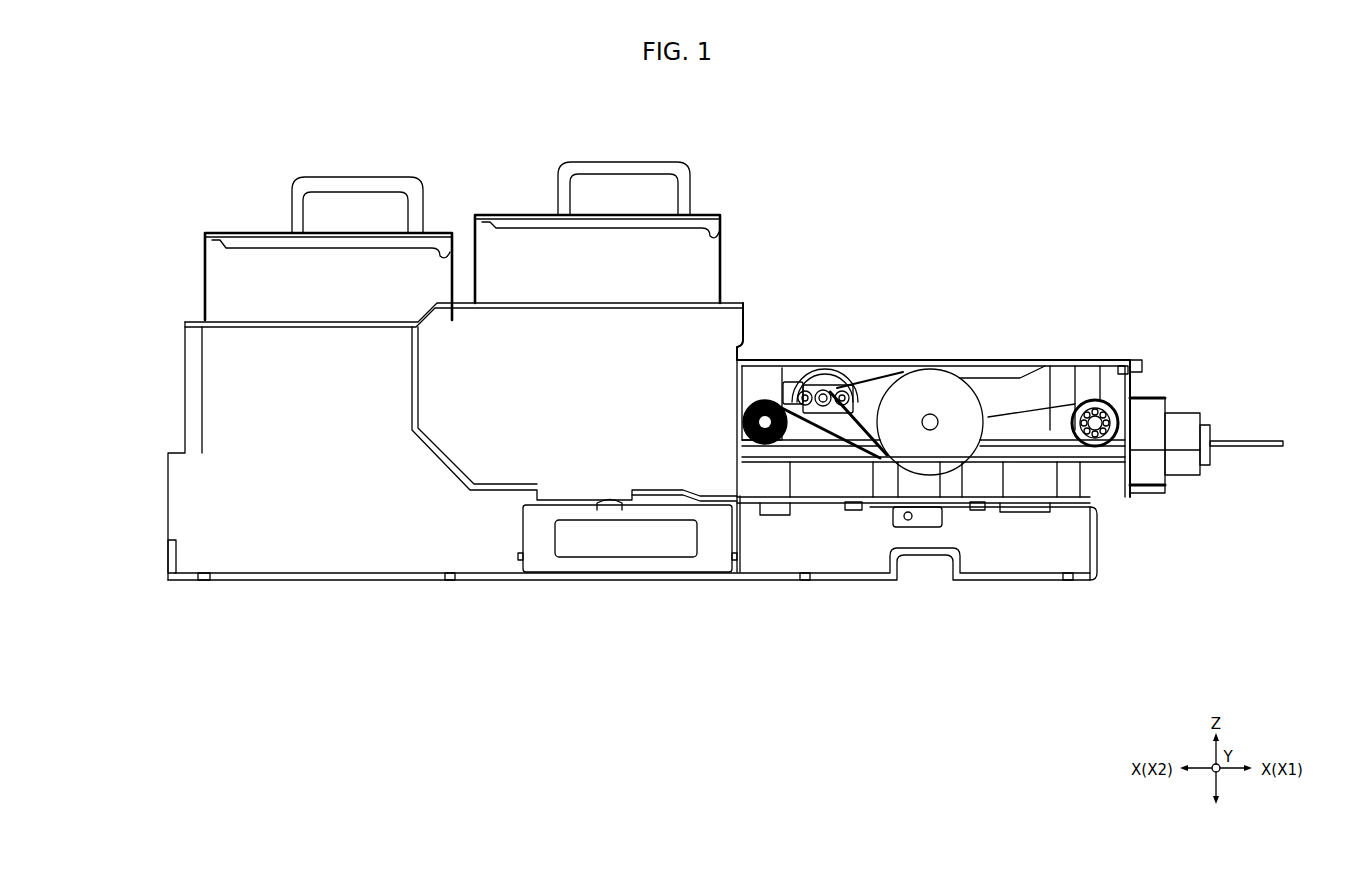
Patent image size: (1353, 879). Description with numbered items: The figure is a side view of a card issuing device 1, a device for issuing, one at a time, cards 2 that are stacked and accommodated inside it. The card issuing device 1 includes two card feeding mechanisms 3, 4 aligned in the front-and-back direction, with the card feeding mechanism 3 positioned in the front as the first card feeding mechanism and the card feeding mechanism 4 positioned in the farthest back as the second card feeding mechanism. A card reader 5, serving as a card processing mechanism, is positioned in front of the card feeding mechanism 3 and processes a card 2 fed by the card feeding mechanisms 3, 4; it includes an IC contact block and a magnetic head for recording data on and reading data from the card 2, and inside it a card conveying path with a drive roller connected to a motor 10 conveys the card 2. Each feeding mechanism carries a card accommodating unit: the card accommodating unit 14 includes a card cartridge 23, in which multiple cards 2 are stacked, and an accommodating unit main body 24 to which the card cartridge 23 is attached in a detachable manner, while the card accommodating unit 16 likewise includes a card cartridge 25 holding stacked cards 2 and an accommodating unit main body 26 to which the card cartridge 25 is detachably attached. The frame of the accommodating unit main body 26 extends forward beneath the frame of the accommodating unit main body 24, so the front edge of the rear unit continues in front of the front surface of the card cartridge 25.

The card issuing device 1 is at (1118, 168).
The card 2 is at (1248, 440).
The card feeding mechanism 3 is at (700, 213).
The card feeding mechanism 4 is at (433, 232).
The card reader 5 is at (1003, 358).
The motor 10 is at (822, 364).
The card accommodating unit 14 is at (518, 212).
The card cartridge 23 is at (597, 190).
The card accommodating unit 16 is at (238, 232).
The card cartridge 25 is at (328, 207).
The accommodating unit main body 24 is at (733, 300).
The accommodating unit main body 26 is at (190, 320).